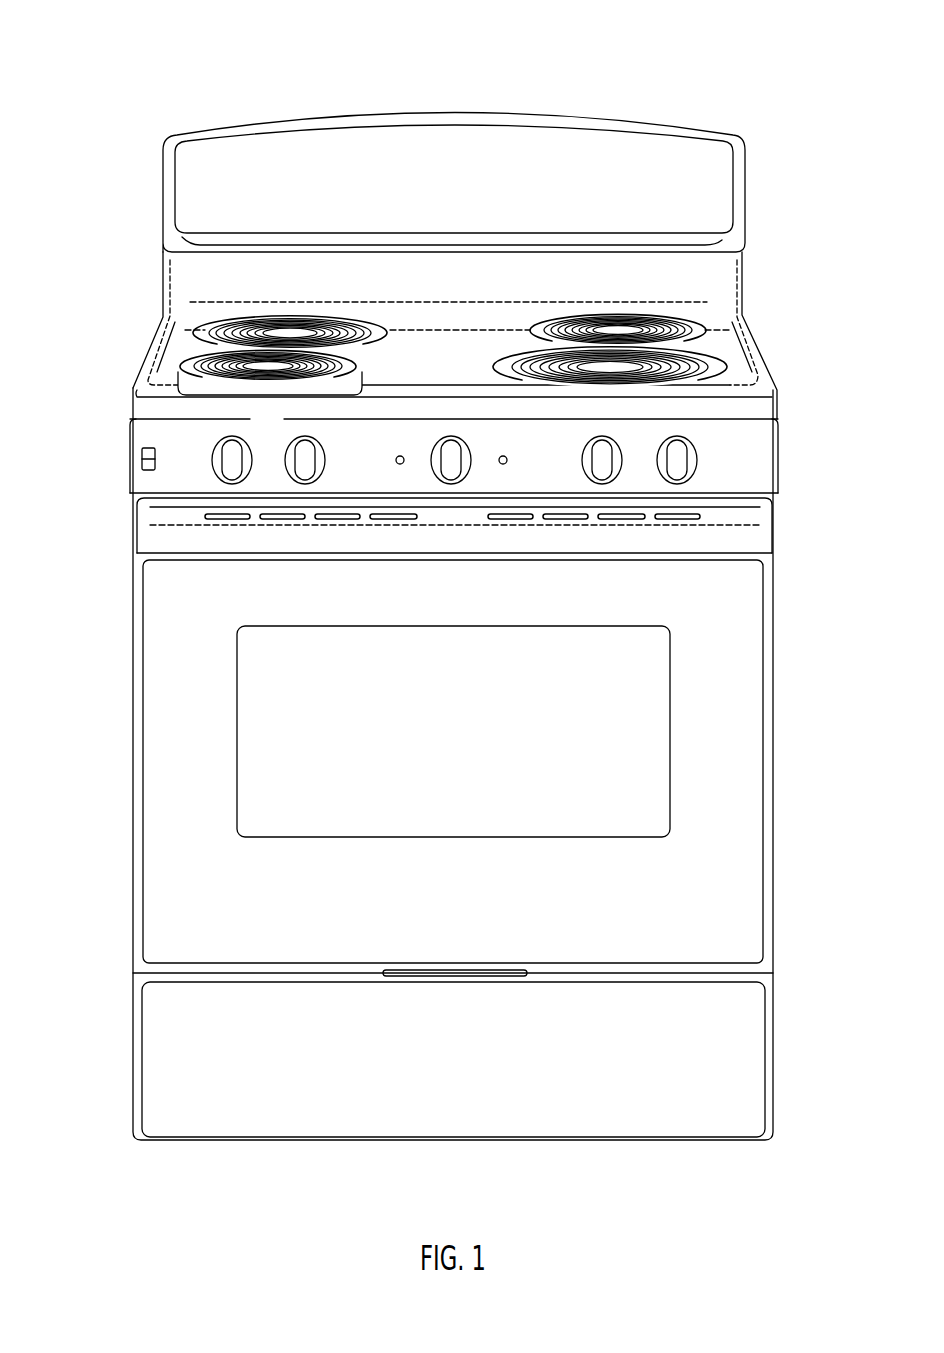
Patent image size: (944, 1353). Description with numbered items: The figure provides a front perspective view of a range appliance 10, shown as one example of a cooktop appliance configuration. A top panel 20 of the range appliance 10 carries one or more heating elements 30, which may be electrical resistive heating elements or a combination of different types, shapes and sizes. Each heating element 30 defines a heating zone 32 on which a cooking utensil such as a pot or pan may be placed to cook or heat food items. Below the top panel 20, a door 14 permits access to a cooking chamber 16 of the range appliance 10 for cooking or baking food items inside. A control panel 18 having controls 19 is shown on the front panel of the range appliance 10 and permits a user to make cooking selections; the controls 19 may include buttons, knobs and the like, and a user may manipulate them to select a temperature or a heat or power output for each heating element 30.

The range appliance 10 is at (458, 586).
The door 14 is at (745, 752).
The cooking chamber 16 is at (126, 685).
The control panel 18 is at (765, 460).
The controls 19 is at (617, 452).
The top panel 20 is at (160, 350).
The heating elements 30 is at (506, 348).
The heating zone 32 is at (277, 397).